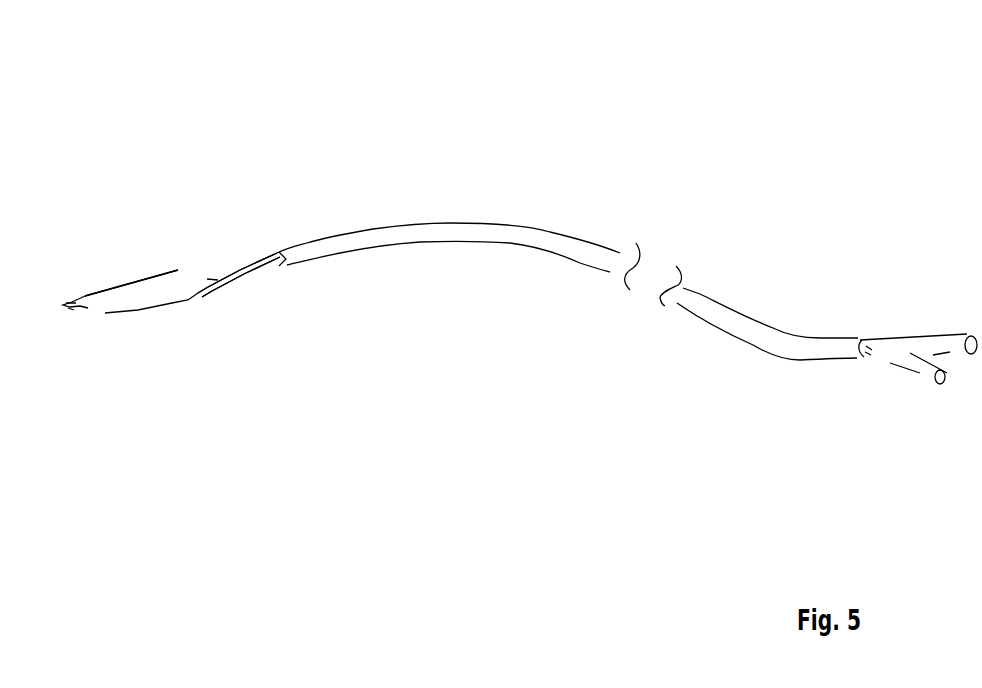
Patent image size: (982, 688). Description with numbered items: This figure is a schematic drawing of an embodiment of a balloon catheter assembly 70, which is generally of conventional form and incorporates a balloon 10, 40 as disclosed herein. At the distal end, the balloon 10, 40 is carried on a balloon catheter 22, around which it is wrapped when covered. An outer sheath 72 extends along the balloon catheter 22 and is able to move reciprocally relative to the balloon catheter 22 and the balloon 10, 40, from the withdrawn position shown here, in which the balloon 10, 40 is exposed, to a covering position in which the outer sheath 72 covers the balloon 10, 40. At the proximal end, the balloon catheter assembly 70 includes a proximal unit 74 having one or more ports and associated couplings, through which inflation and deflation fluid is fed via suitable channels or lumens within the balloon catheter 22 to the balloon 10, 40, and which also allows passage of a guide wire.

The balloon 10 is at (145, 254).
The balloon 40 is at (131, 283).
The balloon catheter 22 is at (250, 276).
The outer sheath 72 is at (522, 211).
The balloon catheter assembly 70 is at (654, 388).
The proximal unit 74 is at (940, 319).